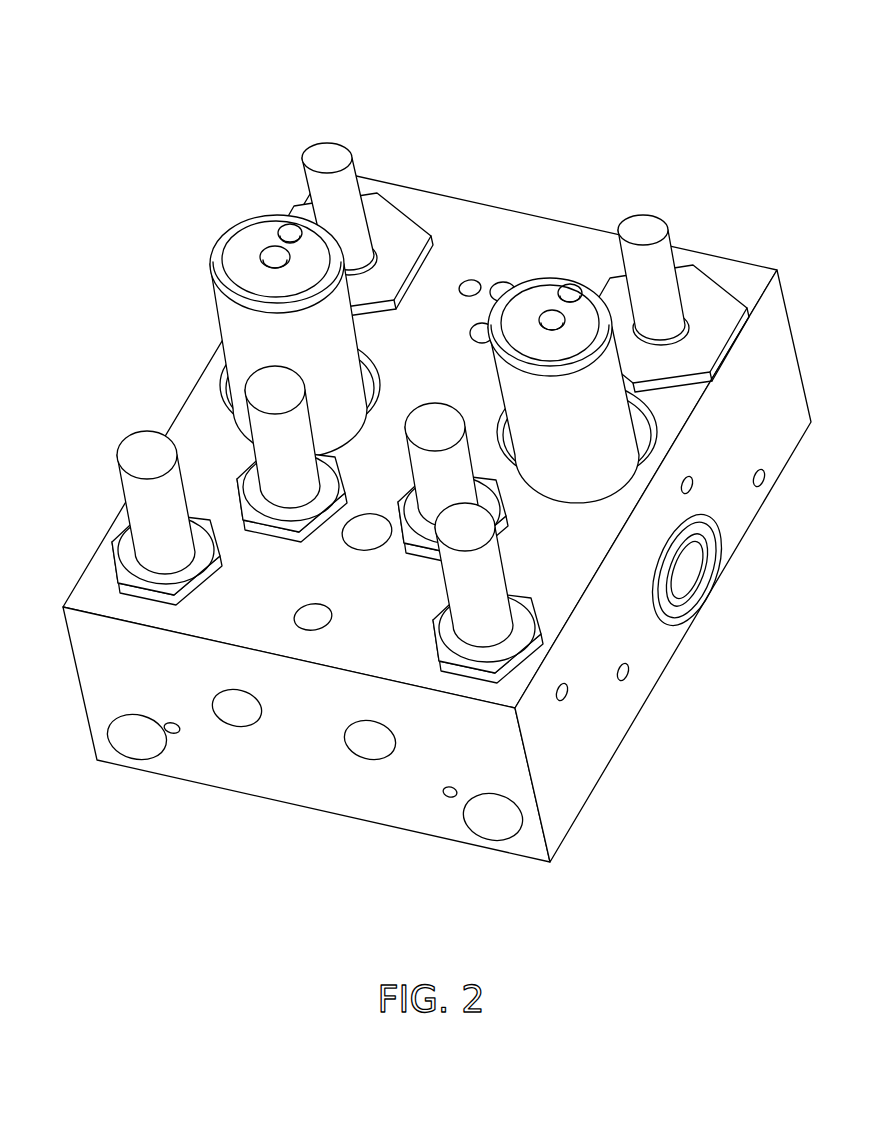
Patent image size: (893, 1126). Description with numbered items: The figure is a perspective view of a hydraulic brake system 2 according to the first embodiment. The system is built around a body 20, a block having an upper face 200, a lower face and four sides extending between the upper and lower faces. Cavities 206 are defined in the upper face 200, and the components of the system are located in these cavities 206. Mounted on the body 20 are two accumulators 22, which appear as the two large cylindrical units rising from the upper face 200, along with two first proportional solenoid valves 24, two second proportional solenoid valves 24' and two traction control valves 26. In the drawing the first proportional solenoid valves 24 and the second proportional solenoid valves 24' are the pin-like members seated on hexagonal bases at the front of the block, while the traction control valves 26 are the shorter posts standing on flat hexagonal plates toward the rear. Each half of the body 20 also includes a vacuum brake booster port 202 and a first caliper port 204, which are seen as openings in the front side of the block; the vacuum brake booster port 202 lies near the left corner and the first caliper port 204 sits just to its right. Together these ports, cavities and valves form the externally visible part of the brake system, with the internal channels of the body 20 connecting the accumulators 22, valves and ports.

The hydraulic brake system 2 is at (416, 450).
The body 20 is at (416, 504).
The accumulator 22 is at (240, 236).
The first proportional solenoid valve 24 is at (234, 414).
The second proportional solenoid valve 24' is at (146, 498).
The traction control valve 26 is at (320, 142).
The upper face 200 is at (461, 212).
The vacuum brake booster port 202 is at (125, 747).
The first caliper port 204 is at (222, 727).
The cavity 206 is at (246, 479).